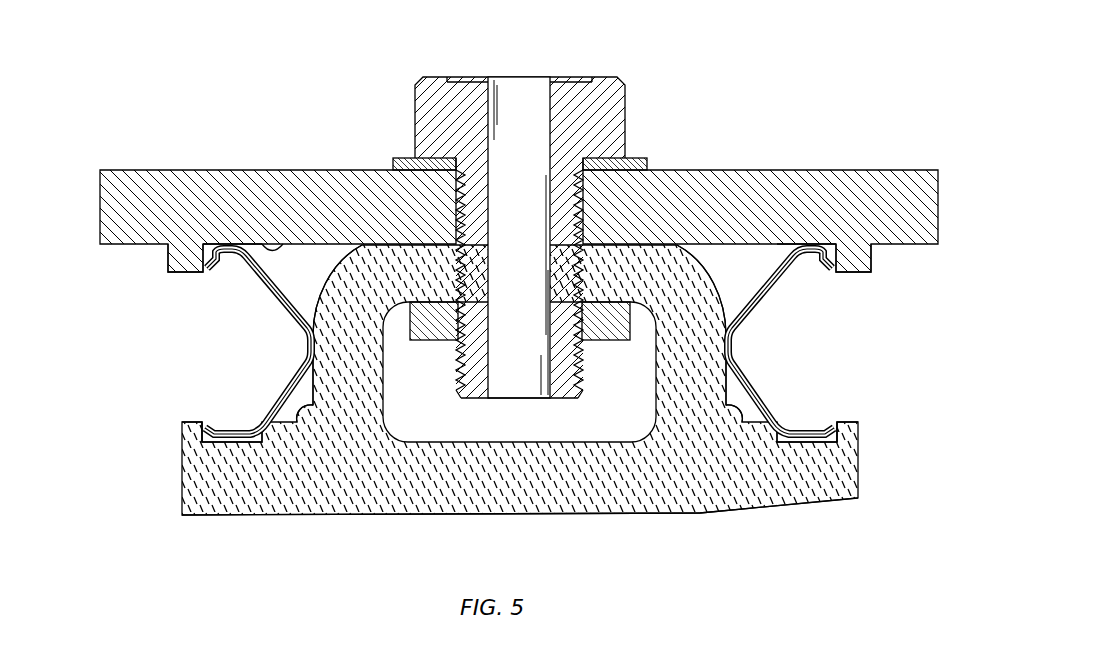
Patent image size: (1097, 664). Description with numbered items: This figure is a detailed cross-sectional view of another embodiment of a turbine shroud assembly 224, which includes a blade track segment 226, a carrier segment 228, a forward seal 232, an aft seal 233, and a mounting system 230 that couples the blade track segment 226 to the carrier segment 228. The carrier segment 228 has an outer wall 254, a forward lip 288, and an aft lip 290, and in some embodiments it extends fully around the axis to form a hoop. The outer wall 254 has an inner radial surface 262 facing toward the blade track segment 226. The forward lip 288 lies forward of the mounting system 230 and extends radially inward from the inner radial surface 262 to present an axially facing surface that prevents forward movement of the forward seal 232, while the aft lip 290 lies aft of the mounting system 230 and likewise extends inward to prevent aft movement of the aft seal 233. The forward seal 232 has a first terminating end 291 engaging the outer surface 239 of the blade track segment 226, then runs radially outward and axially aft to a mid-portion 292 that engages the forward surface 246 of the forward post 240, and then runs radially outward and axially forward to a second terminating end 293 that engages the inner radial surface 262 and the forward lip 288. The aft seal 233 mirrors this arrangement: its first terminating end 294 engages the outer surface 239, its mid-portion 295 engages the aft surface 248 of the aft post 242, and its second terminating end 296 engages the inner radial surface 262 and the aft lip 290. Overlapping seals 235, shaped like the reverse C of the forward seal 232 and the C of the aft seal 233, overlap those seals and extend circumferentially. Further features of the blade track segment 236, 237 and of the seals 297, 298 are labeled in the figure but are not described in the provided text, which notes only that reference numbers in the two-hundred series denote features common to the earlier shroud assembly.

The turbine shroud assembly 224 is at (765, 83).
The blade track segment 226 is at (808, 513).
The carrier segment 228 is at (799, 118).
The mounting system 230 is at (580, 75).
The forward seal 232 is at (272, 300).
The aft seal 233 is at (752, 318).
The overlapping seals 235 is at (242, 263).
The base bottom surface 236 is at (840, 500).
The base bottom surface 237 is at (345, 515).
The outer surface 239 is at (252, 443).
The forward post 240 is at (360, 403).
The aft post 242 is at (698, 410).
The forward surface 246 is at (299, 421).
The aft surface 248 is at (752, 423).
The outer wall 254 is at (298, 195).
The inner radial surface 262 is at (262, 242).
The forward lip 288 is at (178, 257).
The aft lip 290 is at (870, 268).
The first terminating end 291 is at (214, 421).
The mid-portion 292 is at (281, 346).
The second terminating end 293 is at (222, 238).
The first terminating end 294 is at (813, 423).
The mid-portion 295 is at (754, 355).
The second terminating end 296 is at (812, 238).
The rib 297 is at (203, 439).
The seal outer surface 298 is at (204, 297).